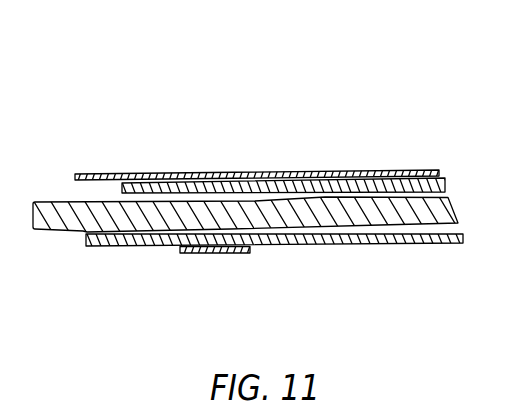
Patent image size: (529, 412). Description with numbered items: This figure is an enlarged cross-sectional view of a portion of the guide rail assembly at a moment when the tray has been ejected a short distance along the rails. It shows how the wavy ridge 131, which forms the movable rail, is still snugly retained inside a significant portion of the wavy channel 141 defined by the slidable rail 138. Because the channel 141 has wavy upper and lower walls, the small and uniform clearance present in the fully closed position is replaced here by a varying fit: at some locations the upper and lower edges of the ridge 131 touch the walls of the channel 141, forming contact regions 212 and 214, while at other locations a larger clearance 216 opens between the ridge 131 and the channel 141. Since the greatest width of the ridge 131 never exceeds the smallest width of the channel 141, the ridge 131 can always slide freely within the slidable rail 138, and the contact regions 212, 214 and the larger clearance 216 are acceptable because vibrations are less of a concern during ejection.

The wavy ridge 131 is at (205, 206).
The channel 141 is at (154, 198).
The contact region 212 is at (340, 197).
The contact region 214 is at (226, 230).
The clearance 216 is at (368, 228).
The slidable rail 138 is at (222, 241).